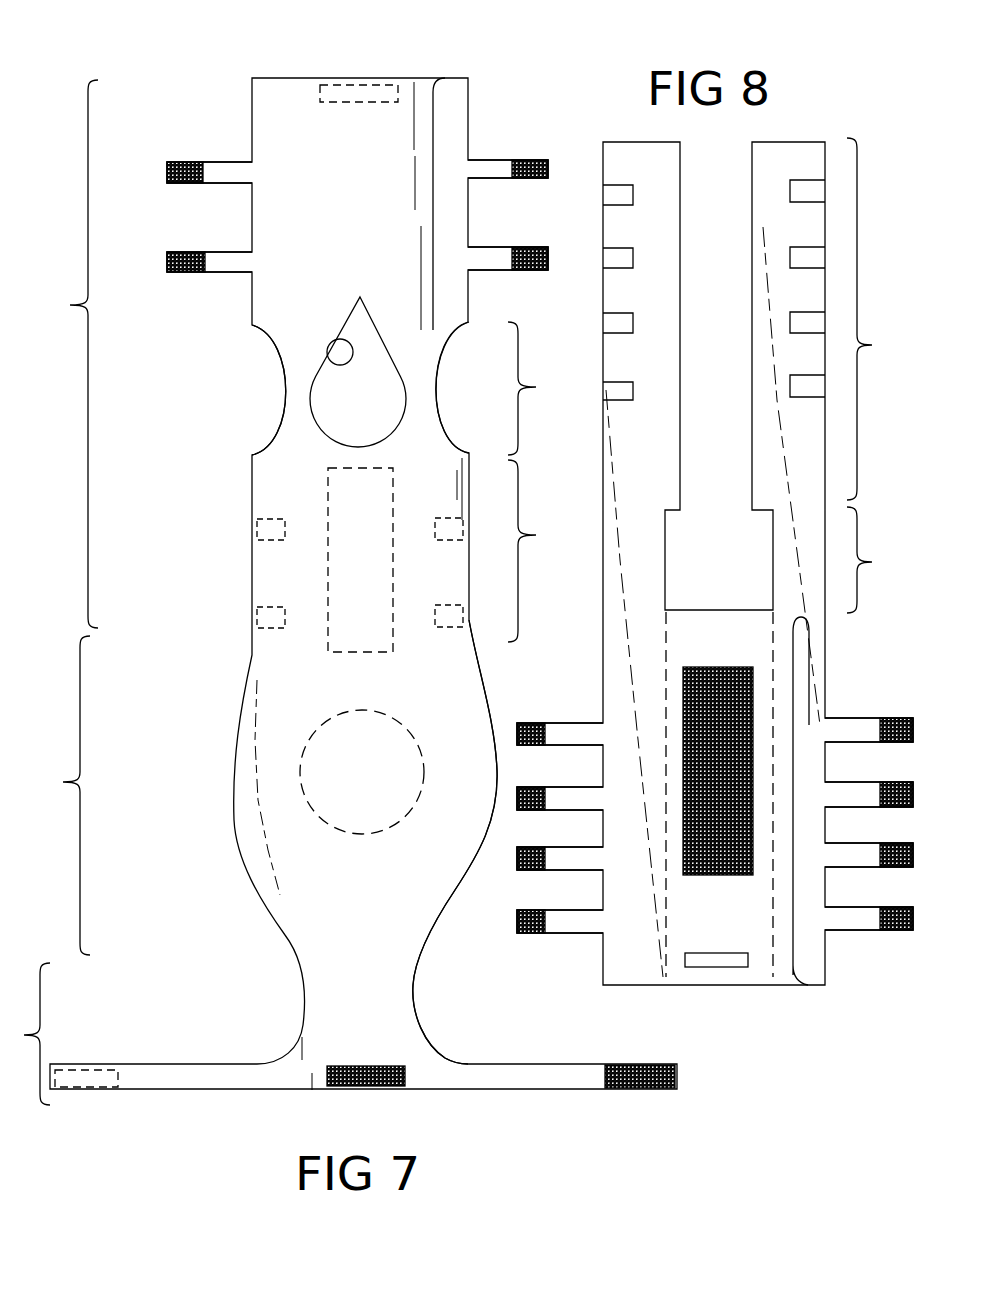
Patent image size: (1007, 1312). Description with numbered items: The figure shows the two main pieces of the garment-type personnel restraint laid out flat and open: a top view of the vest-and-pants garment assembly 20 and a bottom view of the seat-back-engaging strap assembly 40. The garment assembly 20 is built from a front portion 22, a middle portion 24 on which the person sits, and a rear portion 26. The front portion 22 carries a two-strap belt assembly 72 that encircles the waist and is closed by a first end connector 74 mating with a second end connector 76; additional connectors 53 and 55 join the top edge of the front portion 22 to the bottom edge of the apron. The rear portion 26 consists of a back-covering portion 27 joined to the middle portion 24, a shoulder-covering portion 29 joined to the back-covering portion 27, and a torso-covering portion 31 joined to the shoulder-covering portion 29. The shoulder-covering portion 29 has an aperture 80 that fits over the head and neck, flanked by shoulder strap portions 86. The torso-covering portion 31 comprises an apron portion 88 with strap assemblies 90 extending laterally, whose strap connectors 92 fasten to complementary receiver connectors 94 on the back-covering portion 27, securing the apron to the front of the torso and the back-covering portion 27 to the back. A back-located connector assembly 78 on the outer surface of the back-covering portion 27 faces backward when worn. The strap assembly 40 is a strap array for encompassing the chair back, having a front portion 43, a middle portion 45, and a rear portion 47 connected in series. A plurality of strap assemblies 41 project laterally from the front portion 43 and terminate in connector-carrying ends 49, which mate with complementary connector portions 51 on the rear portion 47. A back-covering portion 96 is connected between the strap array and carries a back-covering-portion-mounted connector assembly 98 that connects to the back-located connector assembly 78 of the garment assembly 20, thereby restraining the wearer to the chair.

In FIG. 7, the garment assembly 20 is at (186, 126).
In FIG. 7, the front portion 22 is at (58, 1034).
In FIG. 7, the middle portion 24 is at (56, 795).
In FIG. 7, the rear portion 26 is at (63, 354).
In FIG. 7, the back-covering portion 27 is at (542, 551).
In FIG. 7, the shoulder-covering portion 29 is at (542, 388).
In FIG. 7, the torso-covering portion 31 is at (433, 204).
In FIG. 8, the strap assembly 40 is at (622, 138).
In FIG. 8, the strap assemblies 41 is at (578, 800).
In FIG. 8, the front portion 43 is at (793, 780).
In FIG. 8, the middle portion 45 is at (880, 560).
In FIG. 8, the rear portion 47 is at (879, 319).
In FIG. 8, the connector-carrying ends 49 is at (527, 787).
In FIG. 8, the connector portions 51 is at (793, 258).
In FIG. 7, the additional connector 53 is at (385, 1088).
In FIG. 7, the additional connector 55 is at (365, 92).
In FIG. 7, the two-strap belt assembly 72 is at (440, 1042).
In FIG. 7, the first end connector 74 is at (648, 1088).
In FIG. 7, the second end connector 76 is at (100, 1088).
In FIG. 7, the back-located connector assembly 78 is at (348, 505).
In FIG. 7, the aperture 80 is at (340, 339).
In FIG. 7, the shoulder strap portions 86 is at (288, 398).
In FIG. 7, the apron portion 88 is at (353, 157).
In FIG. 7, the strap assemblies 90 is at (224, 170).
In FIG. 7, the strap connectors 92 is at (185, 257).
In FIG. 7, the receiver connectors 94 is at (256, 620).
In FIG. 8, the back-covering portion 96 is at (745, 967).
In FIG. 8, the back-covering-portion-mounted connector assembly 98 is at (750, 700).